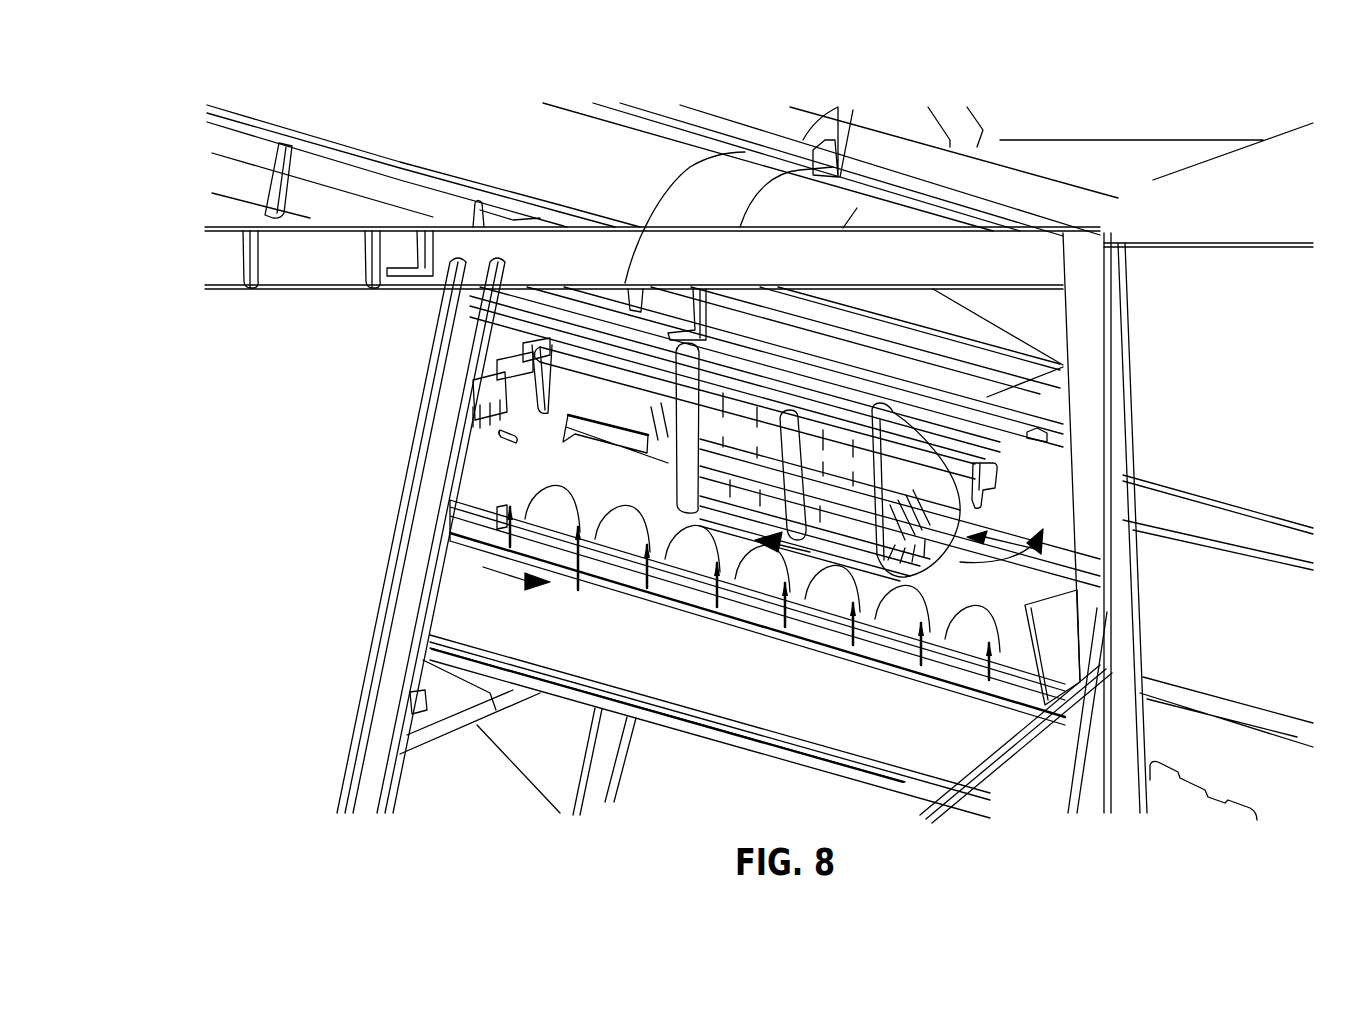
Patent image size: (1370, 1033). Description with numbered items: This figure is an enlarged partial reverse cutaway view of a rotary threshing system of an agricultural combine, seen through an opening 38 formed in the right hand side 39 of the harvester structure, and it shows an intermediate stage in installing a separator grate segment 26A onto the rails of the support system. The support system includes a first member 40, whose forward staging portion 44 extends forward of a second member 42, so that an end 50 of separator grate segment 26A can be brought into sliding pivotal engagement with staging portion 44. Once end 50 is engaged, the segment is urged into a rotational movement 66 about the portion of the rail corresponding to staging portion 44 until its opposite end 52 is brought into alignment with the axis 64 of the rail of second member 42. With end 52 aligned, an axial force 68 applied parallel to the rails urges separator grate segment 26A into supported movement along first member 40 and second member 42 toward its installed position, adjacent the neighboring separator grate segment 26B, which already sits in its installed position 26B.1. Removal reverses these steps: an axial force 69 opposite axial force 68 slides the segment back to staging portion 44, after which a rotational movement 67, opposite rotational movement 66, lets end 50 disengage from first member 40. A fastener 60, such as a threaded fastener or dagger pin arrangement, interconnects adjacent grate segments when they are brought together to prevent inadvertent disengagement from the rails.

The separator grate segment 26A is at (752, 586).
The separator grate segment 26B is at (490, 517).
The installed position of separator grate segment 26B 26B.1 is at (500, 437).
The opening 38 is at (933, 302).
The right hand side 39 is at (359, 392).
The first member 40 is at (578, 437).
The second member 42 is at (607, 342).
The staging portion 44 is at (870, 337).
The end of separator grate segment 50 is at (1047, 433).
The end of separator grate segment 52 is at (982, 402).
The fastener 60 is at (505, 440).
The axis 64 is at (945, 415).
The rotational movement 66 is at (1000, 530).
The rotational movement 67 is at (1040, 553).
The axial force 68 is at (790, 560).
The axial force 69 is at (493, 572).